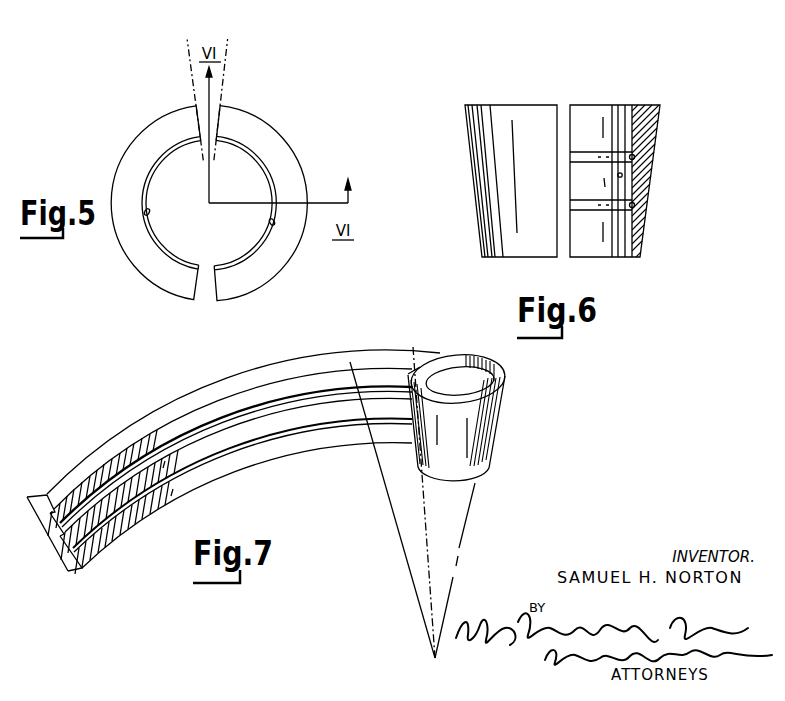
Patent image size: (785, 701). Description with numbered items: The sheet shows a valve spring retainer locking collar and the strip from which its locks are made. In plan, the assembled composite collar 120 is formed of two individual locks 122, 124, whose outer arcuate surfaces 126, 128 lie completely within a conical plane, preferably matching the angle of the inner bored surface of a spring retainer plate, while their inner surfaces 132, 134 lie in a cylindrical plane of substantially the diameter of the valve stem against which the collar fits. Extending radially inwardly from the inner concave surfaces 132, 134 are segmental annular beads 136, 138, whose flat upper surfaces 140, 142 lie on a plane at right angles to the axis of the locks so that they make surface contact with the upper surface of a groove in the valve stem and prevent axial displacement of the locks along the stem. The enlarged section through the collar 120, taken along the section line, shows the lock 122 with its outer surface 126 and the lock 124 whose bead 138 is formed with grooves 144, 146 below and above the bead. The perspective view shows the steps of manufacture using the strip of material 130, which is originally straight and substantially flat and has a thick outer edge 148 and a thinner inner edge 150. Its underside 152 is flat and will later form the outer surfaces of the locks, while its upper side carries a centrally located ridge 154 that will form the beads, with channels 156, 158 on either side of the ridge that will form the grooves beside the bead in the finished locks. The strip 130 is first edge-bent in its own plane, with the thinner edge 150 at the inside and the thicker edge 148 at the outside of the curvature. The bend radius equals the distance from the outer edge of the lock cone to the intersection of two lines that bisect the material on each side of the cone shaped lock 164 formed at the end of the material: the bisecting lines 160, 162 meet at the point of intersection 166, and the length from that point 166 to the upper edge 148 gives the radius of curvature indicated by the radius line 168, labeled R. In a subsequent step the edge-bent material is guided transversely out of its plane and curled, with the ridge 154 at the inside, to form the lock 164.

In FIG. 5, the composite collar 120 is at (223, 175).
In FIG. 6, the composite collar 120 is at (661, 153).
In FIG. 5, the lock 122 is at (128, 151).
In FIG. 6, the lock 122 is at (495, 149).
In FIG. 5, the lock 124 is at (304, 176).
In FIG. 6, the lock 124 is at (663, 111).
In FIG. 6, the outer arcuate surface 126 is at (482, 180).
In FIG. 6, the outer arcuate surface 128 is at (655, 182).
In FIG. 7, the strip of material 130 is at (228, 465).
In FIG. 5, the inner surface 132 is at (145, 213).
In FIG. 5, the inner surface 134 is at (274, 222).
In FIG. 5, the segmental annular bead 136 is at (180, 260).
In FIG. 5, the segmental annular bead 138 is at (242, 260).
In FIG. 6, the segmental annular bead 138 is at (622, 175).
In FIG. 5, the flat upper surface 140 is at (153, 163).
In FIG. 5, the flat upper surface 142 is at (267, 163).
In FIG. 6, the flat upper surface 142 is at (633, 155).
In FIG. 6, the groove 144 is at (636, 205).
In FIG. 6, the groove 146 is at (633, 153).
In FIG. 7, the thick outer edge 148 is at (30, 495).
In FIG. 7, the thinner inner edge 150 is at (75, 570).
In FIG. 7, the underside 152 is at (53, 530).
In FIG. 7, the ridge 154 is at (86, 478).
In FIG. 7, the channel 156 is at (233, 442).
In FIG. 7, the channel 158 is at (148, 445).
In FIG. 7, the bisecting line 160 is at (461, 535).
In FIG. 7, the bisecting line 162 is at (425, 497).
In FIG. 7, the cone shaped lock 164 is at (447, 397).
In FIG. 7, the point of intersection 166 is at (437, 660).
In FIG. 7, the radius line 168 is at (402, 543).